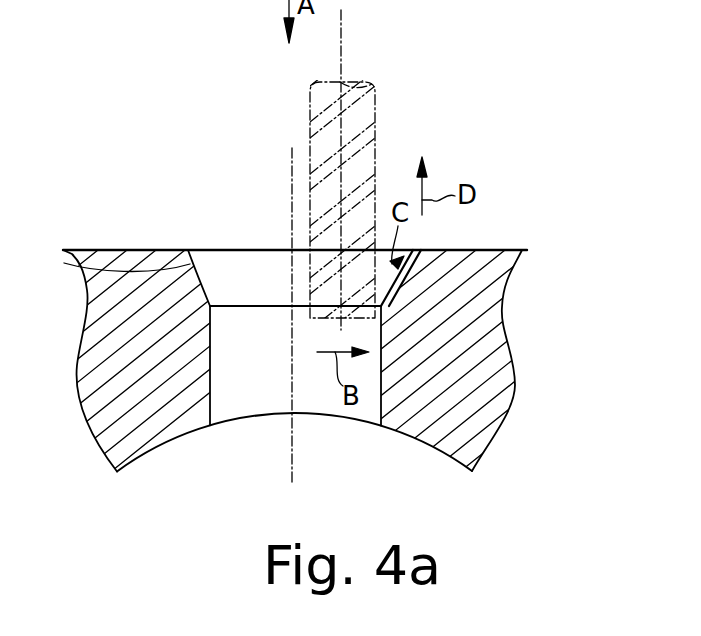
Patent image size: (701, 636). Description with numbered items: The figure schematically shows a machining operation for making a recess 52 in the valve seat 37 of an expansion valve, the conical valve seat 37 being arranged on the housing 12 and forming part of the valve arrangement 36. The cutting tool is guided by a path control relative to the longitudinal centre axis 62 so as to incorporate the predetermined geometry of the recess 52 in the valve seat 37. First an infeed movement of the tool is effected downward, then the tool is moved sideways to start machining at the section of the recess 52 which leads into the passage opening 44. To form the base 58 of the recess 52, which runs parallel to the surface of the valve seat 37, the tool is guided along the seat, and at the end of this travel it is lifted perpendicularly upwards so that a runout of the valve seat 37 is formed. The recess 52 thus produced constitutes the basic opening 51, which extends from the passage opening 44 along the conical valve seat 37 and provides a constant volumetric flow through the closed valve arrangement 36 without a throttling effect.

The housing 12 is at (488, 440).
The valve arrangement 36 is at (453, 164).
The valve seat 37 is at (64, 263).
The passage opening 44 is at (260, 398).
The basic opening 51 is at (403, 308).
The recess 52 is at (415, 266).
The base 58 is at (413, 268).
The longitudinal centre axis 62 is at (292, 182).